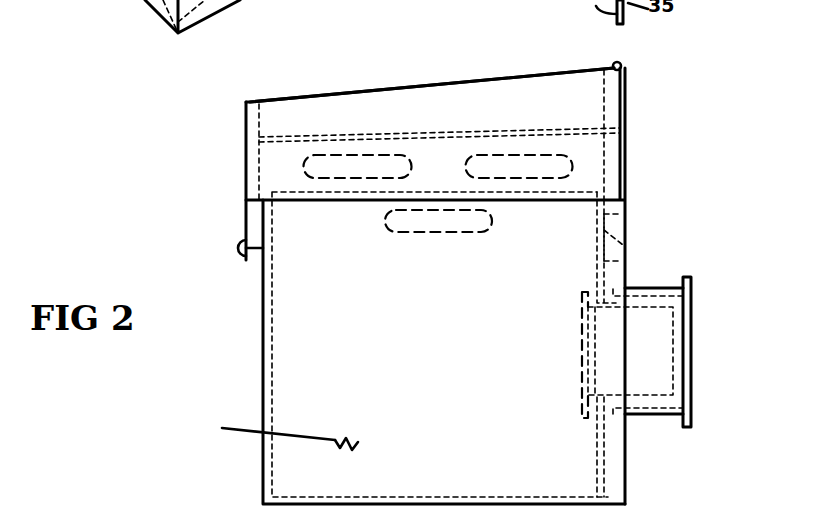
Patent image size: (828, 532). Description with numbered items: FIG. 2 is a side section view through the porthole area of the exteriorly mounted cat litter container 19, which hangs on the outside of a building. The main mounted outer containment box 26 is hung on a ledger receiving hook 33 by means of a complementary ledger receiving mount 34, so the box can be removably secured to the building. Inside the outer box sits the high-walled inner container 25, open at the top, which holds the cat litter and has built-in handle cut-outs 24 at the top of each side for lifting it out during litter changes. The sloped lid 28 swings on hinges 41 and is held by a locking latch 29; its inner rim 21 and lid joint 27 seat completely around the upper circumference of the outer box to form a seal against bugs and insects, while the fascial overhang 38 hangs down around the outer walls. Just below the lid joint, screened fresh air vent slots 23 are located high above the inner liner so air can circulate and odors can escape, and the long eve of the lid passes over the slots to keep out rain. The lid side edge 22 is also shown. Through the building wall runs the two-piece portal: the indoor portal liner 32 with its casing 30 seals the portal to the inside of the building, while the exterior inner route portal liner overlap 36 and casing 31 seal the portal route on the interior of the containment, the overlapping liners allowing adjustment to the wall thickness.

The container 19 is at (118, 226).
The inner rim 21 is at (603, 111).
The lid side edge 22 is at (249, 102).
The screened fresh air vent slots 23 is at (328, 155).
The handle cut-outs 24 is at (393, 230).
The high-walled inner container 25 is at (279, 434).
The main mounted outer containment box 26 is at (262, 372).
The lid joint 27 is at (257, 137).
The sloped lid 28 is at (380, 88).
The locking latch 29 is at (240, 247).
The casing 30 is at (690, 420).
The casing 31 is at (583, 300).
The indoor portal liner 32 is at (643, 415).
The ledger receiving hook 33 is at (616, 250).
The ledger receiving mount 34 is at (622, 213).
The exterior inner route portal liner overlap 36 is at (667, 313).
The fascial overhang 38 is at (246, 172).
The hinges 41 is at (612, 69).